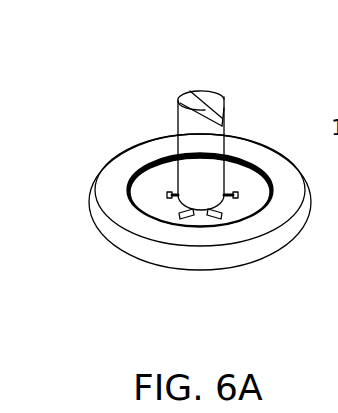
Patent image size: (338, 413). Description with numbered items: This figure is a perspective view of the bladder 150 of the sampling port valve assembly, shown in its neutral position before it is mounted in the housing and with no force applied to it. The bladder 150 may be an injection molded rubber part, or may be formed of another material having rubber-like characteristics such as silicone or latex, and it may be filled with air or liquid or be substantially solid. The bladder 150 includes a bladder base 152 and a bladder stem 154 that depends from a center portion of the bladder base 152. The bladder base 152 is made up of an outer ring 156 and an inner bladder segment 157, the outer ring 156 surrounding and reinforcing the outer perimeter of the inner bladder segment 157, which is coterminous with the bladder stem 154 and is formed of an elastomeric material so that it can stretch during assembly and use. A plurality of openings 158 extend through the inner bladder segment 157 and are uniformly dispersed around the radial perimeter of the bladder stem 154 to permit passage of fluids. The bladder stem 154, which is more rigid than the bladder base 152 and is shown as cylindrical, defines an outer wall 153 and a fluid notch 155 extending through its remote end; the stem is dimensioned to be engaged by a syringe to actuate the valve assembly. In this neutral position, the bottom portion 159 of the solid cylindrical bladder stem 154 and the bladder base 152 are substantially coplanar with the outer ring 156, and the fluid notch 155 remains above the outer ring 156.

The bladder 150 is at (169, 223).
The bladder base 152 is at (113, 203).
The outer wall 153 is at (196, 165).
The bladder stem 154 is at (186, 135).
The fluid notch 155 is at (212, 97).
The outer ring 156 is at (162, 257).
The inner bladder segment 157 is at (253, 212).
The openings 158 is at (233, 190).
The bottom portion 159 is at (200, 211).